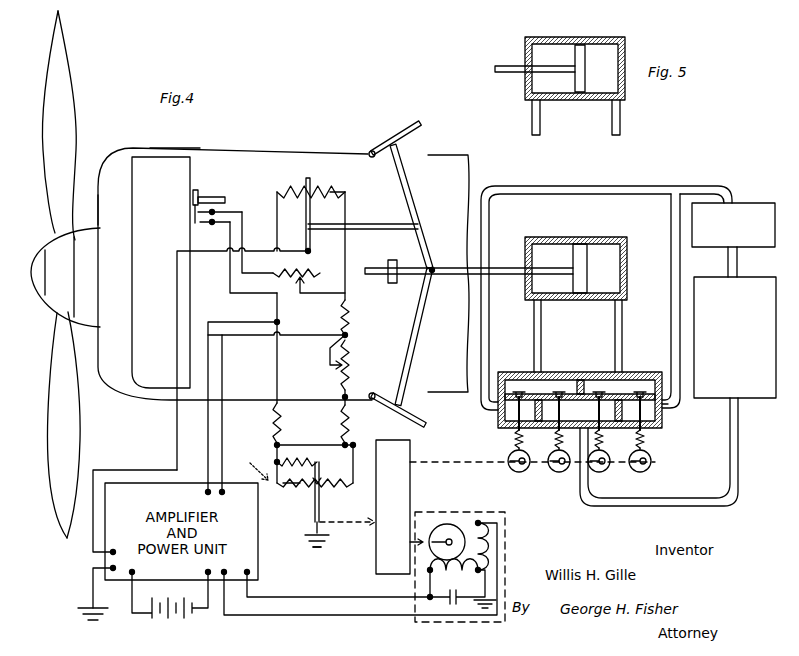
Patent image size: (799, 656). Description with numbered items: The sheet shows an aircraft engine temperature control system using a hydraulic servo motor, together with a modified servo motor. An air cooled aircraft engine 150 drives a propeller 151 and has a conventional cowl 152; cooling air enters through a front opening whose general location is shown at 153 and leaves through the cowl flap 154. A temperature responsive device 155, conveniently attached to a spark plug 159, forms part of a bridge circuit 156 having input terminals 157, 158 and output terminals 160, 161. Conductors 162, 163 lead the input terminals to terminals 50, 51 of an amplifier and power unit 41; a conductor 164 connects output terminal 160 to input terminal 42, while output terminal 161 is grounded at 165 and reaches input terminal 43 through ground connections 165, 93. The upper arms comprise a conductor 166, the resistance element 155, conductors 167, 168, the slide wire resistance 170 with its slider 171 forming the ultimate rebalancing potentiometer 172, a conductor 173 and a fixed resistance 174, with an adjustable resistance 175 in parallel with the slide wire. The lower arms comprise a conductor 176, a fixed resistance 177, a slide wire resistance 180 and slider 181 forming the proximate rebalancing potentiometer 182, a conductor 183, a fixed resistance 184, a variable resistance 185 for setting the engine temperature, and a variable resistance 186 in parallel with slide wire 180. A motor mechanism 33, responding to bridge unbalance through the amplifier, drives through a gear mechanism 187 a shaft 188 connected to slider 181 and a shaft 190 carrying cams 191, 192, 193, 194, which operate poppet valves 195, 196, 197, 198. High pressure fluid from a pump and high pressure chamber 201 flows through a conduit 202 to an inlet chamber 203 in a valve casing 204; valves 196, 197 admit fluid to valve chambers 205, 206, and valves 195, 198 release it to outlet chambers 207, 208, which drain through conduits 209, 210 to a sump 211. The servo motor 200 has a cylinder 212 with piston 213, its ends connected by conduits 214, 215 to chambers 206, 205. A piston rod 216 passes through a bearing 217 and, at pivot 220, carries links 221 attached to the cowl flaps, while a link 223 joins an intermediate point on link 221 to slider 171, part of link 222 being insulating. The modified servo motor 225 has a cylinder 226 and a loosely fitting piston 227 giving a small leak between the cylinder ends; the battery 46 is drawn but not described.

In FIG. 4, the motor mechanism 33 is at (506, 536).
In FIG. 4, the amplifier and power unit 41 is at (258, 555).
In FIG. 4, the input terminal 42 is at (114, 548).
In FIG. 4, the input terminal 43 is at (110, 568).
In FIG. 4, the battery 46 is at (196, 614).
In FIG. 4, the terminal 50 is at (205, 493).
In FIG. 4, the terminal 51 is at (225, 493).
In FIG. 4, the ground connection 93 is at (87, 612).
In FIG. 4, the aircraft engine 150 is at (132, 201).
In FIG. 4, the propeller 151 is at (62, 336).
In FIG. 4, the cowl 152 is at (180, 148).
In FIG. 4, the front opening location 153 is at (93, 213).
In FIG. 4, the cowl flap 154 is at (404, 128).
In FIG. 4, the temperature responsive device 155 is at (217, 226).
In FIG. 4, the bridge circuit 156 is at (319, 325).
In FIG. 4, the input terminal 157 is at (267, 321).
In FIG. 4, the input terminal 158 is at (352, 339).
In FIG. 4, the spark plug 159 is at (210, 195).
In FIG. 4, the output terminal 160 is at (309, 250).
In FIG. 4, the output terminal 161 is at (313, 530).
In FIG. 4, the conductor 162 is at (208, 465).
In FIG. 4, the conductor 163 is at (224, 438).
In FIG. 4, the conductor 164 is at (175, 423).
In FIG. 4, the ground connection 165 is at (324, 534).
In FIG. 4, the conductor 166 is at (230, 285).
In FIG. 4, the conductor 167 is at (243, 245).
In FIG. 4, the conductor 168 is at (278, 224).
In FIG. 4, the slide wire resistance 170 is at (295, 190).
In FIG. 4, the slider 171 is at (311, 208).
In FIG. 4, the ultimate rebalancing potentiometer 172 is at (359, 199).
In FIG. 4, the conductor 173 is at (347, 253).
In FIG. 4, the fixed resistance 174 is at (350, 312).
In FIG. 4, the adjustable resistance 175 is at (309, 288).
In FIG. 4, the conductor 176 is at (276, 373).
In FIG. 4, the fixed resistance 177 is at (281, 416).
In FIG. 4, the slide wire resistance 180 is at (292, 488).
In FIG. 4, the slider 181 is at (313, 512).
In FIG. 4, the proximate rebalancing potentiometer 182 is at (247, 464).
In FIG. 4, the conductor 183 is at (352, 453).
In FIG. 4, the fixed resistance 184 is at (350, 421).
In FIG. 4, the variable resistance 185 is at (352, 371).
In FIG. 4, the variable resistance 186 is at (298, 460).
In FIG. 4, the gear mechanism 187 is at (385, 561).
In FIG. 4, the shaft 188 is at (368, 518).
In FIG. 4, the shaft 190 is at (412, 460).
In FIG. 4, the cam 191 is at (516, 474).
In FIG. 4, the cam 192 is at (568, 477).
In FIG. 4, the cam 193 is at (596, 475).
In FIG. 4, the cam 194 is at (646, 476).
In FIG. 4, the poppet valve 195 is at (517, 375).
In FIG. 4, the poppet valve 196 is at (559, 376).
In FIG. 4, the poppet valve 197 is at (598, 378).
In FIG. 4, the poppet valve 198 is at (641, 376).
In FIG. 4, the hydraulic servo motor 200 is at (594, 253).
In FIG. 4, the pump and high pressure chamber 201 is at (760, 399).
In FIG. 4, the conduit 202 is at (740, 480).
In FIG. 4, the inlet chamber 203 is at (579, 405).
In FIG. 4, the valve casing 204 is at (585, 400).
In FIG. 4, the valve chamber 205 is at (529, 389).
In FIG. 4, the valve chamber 206 is at (627, 389).
In FIG. 4, the outlet chamber 207 is at (497, 430).
In FIG. 4, the outlet chamber 208 is at (670, 400).
In FIG. 4, the conduit 209 is at (609, 190).
In FIG. 4, the conduit 210 is at (670, 260).
In FIG. 4, the sump 211 is at (758, 203).
In FIG. 4, the cylinder 212 is at (628, 286).
In FIG. 4, the piston 213 is at (587, 262).
In FIG. 4, the conduit 214 is at (623, 328).
In FIG. 5, the conduit 214 is at (622, 118).
In FIG. 4, the conduit 215 is at (541, 334).
In FIG. 5, the conduit 215 is at (541, 120).
In FIG. 4, the piston rod 216 is at (510, 276).
In FIG. 5, the piston rod 216 is at (510, 76).
In FIG. 4, the bearing 217 is at (391, 284).
In FIG. 4, the pivot 220 is at (452, 258).
In FIG. 4, the link 221 is at (413, 206).
In FIG. 4, the link 222 is at (421, 344).
In FIG. 4, the link 223 is at (393, 222).
In FIG. 5, the servo motor 225 is at (580, 71).
In FIG. 5, the cylinder 226 is at (628, 51).
In FIG. 5, the loosely fitting piston 227 is at (585, 78).